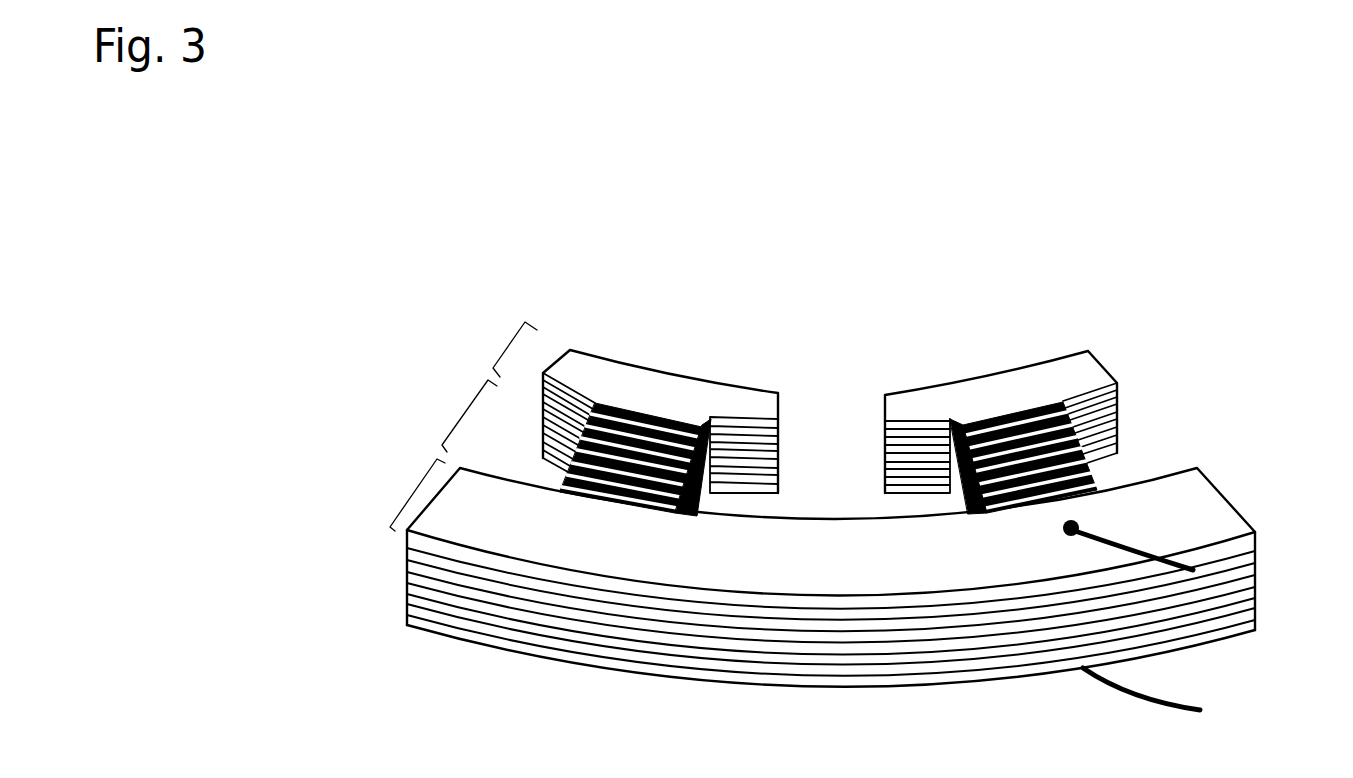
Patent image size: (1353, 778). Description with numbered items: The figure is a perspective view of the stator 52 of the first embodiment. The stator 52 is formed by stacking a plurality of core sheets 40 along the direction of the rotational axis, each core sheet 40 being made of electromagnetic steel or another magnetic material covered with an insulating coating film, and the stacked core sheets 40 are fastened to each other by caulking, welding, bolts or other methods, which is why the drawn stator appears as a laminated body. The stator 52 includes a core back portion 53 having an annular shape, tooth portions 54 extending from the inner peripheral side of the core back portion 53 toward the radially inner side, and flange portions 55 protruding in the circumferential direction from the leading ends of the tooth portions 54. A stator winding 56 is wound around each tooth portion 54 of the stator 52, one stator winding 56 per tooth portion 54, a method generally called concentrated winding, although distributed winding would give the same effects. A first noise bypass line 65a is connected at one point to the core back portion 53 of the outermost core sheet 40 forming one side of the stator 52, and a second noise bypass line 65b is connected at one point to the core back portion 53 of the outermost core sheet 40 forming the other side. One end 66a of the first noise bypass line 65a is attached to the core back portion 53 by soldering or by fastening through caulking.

The core sheet 40 is at (420, 539).
The stator 52 is at (842, 690).
The core back portion 53 is at (413, 488).
The tooth portion 54 is at (462, 412).
The flange portion 55 is at (507, 347).
The stator winding 56 is at (708, 484).
The first noise bypass line 65a is at (1140, 560).
The second noise bypass line 65b is at (1160, 697).
The one end of the first noise bypass line 66a is at (1065, 528).